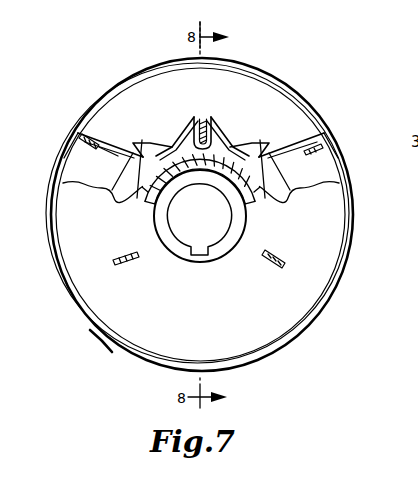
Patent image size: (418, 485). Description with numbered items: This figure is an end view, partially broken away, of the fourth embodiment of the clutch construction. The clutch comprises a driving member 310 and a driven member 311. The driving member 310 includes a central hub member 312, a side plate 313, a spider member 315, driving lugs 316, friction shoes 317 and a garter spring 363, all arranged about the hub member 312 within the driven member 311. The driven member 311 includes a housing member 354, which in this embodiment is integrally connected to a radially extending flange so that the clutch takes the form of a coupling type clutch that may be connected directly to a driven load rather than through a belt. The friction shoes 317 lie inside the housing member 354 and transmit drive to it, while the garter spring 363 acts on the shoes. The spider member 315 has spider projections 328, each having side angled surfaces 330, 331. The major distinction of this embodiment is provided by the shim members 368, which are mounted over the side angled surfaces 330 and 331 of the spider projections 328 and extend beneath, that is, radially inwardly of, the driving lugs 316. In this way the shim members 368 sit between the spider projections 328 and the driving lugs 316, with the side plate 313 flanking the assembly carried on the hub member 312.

The driving member 310 is at (313, 279).
The driven member 311 is at (104, 333).
The hub member 312 is at (229, 246).
The side plate 313 is at (92, 264).
The spider member 315 is at (252, 147).
The driving lug 316 is at (204, 122).
The friction shoe 317 is at (284, 108).
The spider projection 328 is at (186, 139).
The side angled surface 330 is at (184, 128).
The side angled surface 331 is at (236, 116).
The housing member 354 is at (288, 351).
The garter spring 363 is at (88, 142).
The shim member 368 is at (189, 127).